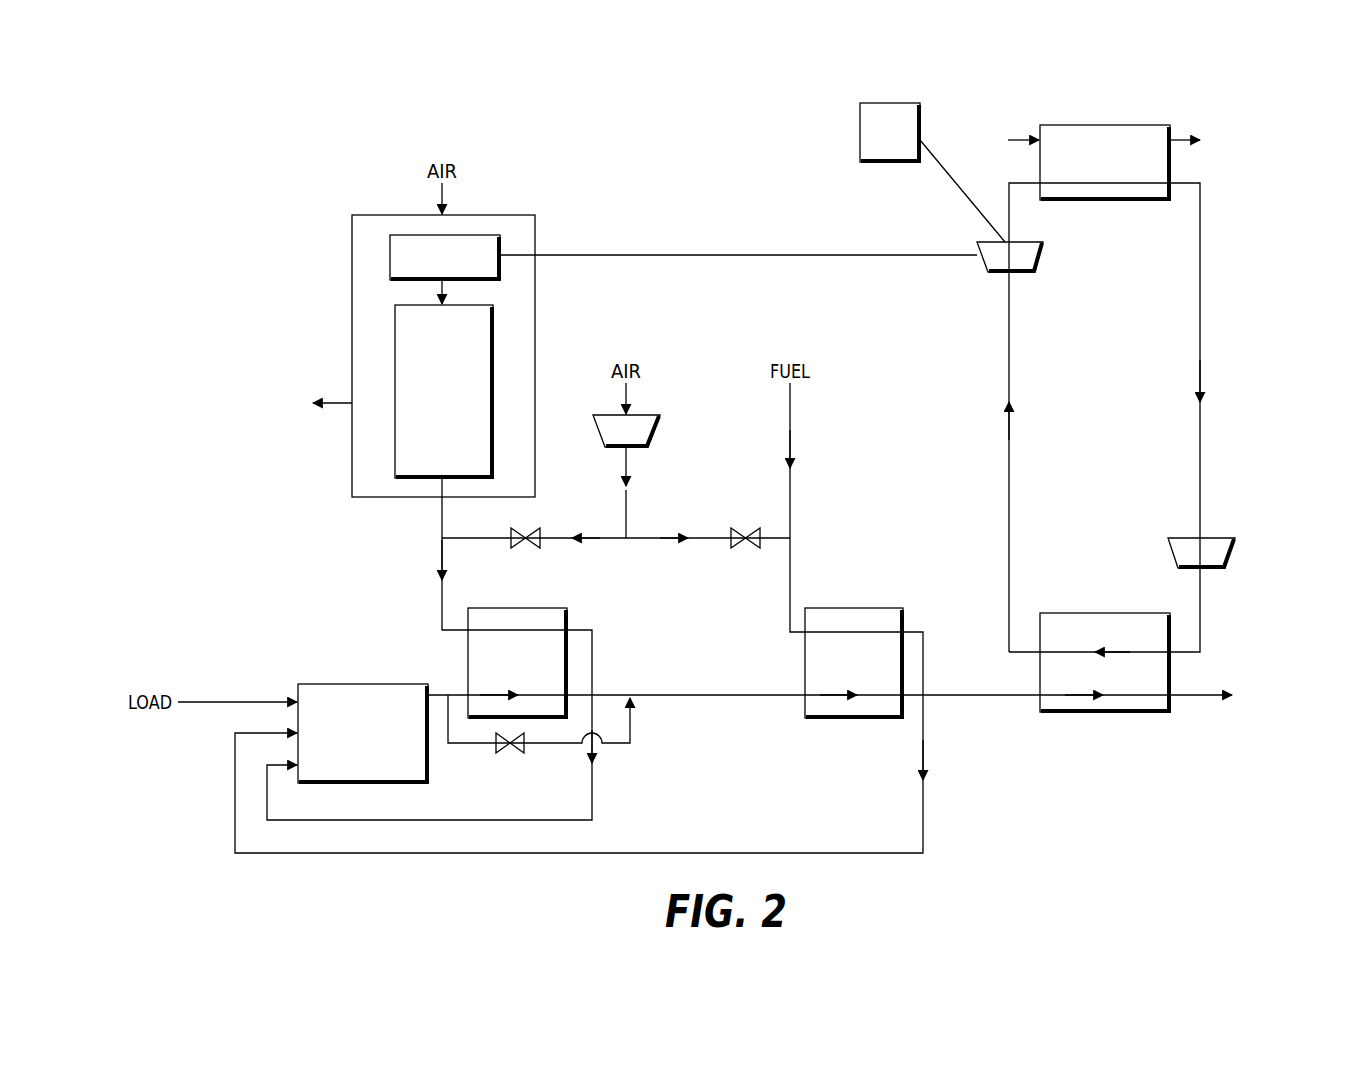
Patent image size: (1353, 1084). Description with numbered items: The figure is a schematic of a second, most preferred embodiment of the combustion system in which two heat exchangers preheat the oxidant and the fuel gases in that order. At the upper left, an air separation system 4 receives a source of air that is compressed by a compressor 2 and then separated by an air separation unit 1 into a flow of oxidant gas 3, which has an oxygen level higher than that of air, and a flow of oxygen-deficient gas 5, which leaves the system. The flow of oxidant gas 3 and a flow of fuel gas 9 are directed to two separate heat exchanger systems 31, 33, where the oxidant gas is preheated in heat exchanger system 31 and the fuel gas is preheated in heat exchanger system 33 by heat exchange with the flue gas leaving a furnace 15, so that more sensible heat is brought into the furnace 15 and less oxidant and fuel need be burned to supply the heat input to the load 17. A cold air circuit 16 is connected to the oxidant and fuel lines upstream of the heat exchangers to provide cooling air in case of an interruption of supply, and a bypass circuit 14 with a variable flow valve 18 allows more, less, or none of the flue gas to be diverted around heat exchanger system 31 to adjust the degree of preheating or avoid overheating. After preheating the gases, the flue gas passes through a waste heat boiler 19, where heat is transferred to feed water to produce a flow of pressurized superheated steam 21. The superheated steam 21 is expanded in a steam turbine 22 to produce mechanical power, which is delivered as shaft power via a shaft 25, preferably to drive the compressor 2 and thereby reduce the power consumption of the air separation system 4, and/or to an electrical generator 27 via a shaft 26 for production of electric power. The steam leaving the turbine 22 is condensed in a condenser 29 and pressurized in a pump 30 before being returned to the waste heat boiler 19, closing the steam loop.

The air separation unit 1 is at (417, 428).
The compressor 2 is at (481, 247).
The flow of oxidant gas 3 is at (436, 516).
The air separation system 4 is at (368, 293).
The flow of oxygen-deficient gas 5 is at (334, 392).
The flow of fuel gas 9 is at (798, 412).
The bypass circuit 14 is at (643, 727).
The furnace 15 is at (334, 708).
The cold air circuit 16 is at (633, 391).
The load 17 is at (213, 691).
The variable flow valve 18 is at (512, 758).
The waste heat boiler 19 is at (1068, 675).
The flow of superheated steam 21 is at (1003, 475).
The steam turbine 22 is at (1046, 252).
The shaft 25 is at (737, 251).
The shaft 26 is at (961, 181).
The generator 27 is at (874, 120).
The condenser 29 is at (1106, 146).
The pump 30 is at (1242, 548).
The heat exchanger system 31 is at (481, 670).
The heat exchanger system 33 is at (826, 672).